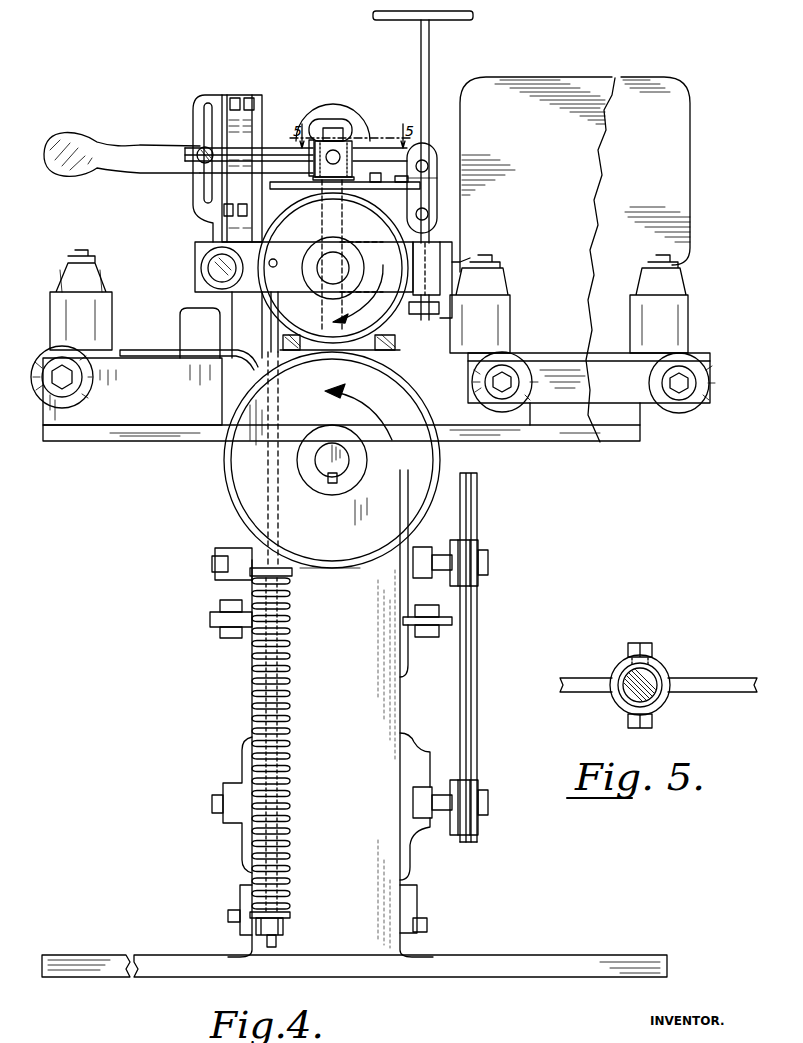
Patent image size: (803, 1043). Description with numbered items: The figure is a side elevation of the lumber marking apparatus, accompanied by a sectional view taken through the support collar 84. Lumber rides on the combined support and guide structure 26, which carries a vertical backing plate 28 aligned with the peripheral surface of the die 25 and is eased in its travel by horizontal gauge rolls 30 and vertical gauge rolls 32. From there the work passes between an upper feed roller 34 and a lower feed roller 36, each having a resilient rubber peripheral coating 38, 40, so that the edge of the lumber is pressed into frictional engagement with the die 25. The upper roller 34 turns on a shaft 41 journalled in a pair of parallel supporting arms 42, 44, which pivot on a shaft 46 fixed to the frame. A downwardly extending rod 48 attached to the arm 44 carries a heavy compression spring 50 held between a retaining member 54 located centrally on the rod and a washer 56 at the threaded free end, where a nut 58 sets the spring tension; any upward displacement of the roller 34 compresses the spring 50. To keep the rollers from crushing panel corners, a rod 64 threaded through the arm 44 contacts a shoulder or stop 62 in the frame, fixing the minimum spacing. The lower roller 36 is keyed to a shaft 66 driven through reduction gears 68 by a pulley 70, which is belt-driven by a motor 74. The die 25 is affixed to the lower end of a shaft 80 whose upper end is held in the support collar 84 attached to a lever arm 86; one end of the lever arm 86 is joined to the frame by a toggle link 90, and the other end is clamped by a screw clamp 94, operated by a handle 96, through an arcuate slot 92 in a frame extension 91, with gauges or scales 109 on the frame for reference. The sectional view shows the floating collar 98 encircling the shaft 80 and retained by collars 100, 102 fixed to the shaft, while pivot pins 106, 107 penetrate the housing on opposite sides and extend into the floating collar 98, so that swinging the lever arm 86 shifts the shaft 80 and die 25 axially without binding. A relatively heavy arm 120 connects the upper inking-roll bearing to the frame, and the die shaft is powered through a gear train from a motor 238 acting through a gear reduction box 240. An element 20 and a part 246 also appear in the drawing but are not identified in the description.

In FIG. 4, the support bar 20 is at (160, 353).
In FIG. 4, the die 25 is at (340, 355).
In FIG. 4, the combined support and guide means 26 is at (593, 455).
In FIG. 4, the vertical backing plate 28 is at (655, 86).
In FIG. 4, the horizontal gauge rolls 30 is at (497, 403).
In FIG. 4, the vertical gauge rolls 32 is at (460, 340).
In FIG. 4, the upper roller 34 is at (378, 308).
In FIG. 4, the lower roller 36 is at (420, 466).
In FIG. 4, the peripheral coating 38 is at (341, 341).
In FIG. 4, the peripheral coating 40 is at (428, 500).
In FIG. 4, the shaft 41 is at (322, 270).
In FIG. 4, the supporting arm 42 is at (305, 290).
In FIG. 4, the supporting arm 44 is at (412, 250).
In FIG. 4, the shaft 46 is at (218, 270).
In FIG. 4, the rod 48 is at (271, 352).
In FIG. 4, the compression spring 50 is at (288, 894).
In FIG. 4, the retaining member 54 is at (291, 572).
In FIG. 4, the washer 56 is at (289, 914).
In FIG. 4, the nut 58 is at (284, 930).
In FIG. 4, the shoulder or stop 62 is at (431, 289).
In FIG. 4, the rod 64 is at (431, 54).
In FIG. 4, the shaft 66 is at (346, 460).
In FIG. 4, the reduction gears 68 is at (415, 552).
In FIG. 4, the pulley 70 is at (478, 507).
In FIG. 4, the motor 74 is at (408, 752).
In FIG. 4, the shaft 80 is at (342, 130).
In FIG. 5, the shaft 80 is at (650, 678).
In FIG. 4, the support collar 84 is at (352, 150).
In FIG. 5, the support collar 84 is at (668, 702).
In FIG. 4, the lever arm 86 is at (273, 150).
In FIG. 4, the toggle link 90 is at (436, 190).
In FIG. 4, the frame extension 91 is at (195, 108).
In FIG. 4, the arcuate slot 92 is at (208, 108).
In FIG. 4, the screw clamp 94 is at (200, 162).
In FIG. 4, the handle 96 is at (288, 148).
In FIG. 5, the floating collar 98 is at (652, 668).
In FIG. 4, the collar 100 is at (345, 140).
In FIG. 5, the collar 100 is at (630, 696).
In FIG. 4, the collar 102 is at (343, 185).
In FIG. 5, the pivot pin 106 is at (650, 645).
In FIG. 5, the pivot pin 107 is at (650, 728).
In FIG. 4, the gauges or scales 109 is at (252, 122).
In FIG. 4, the heavy arm 120 is at (452, 264).
In FIG. 4, the motor 238 is at (300, 130).
In FIG. 4, the gear reduction box 240 is at (328, 118).
In FIG. 4, the pin 246 is at (428, 176).